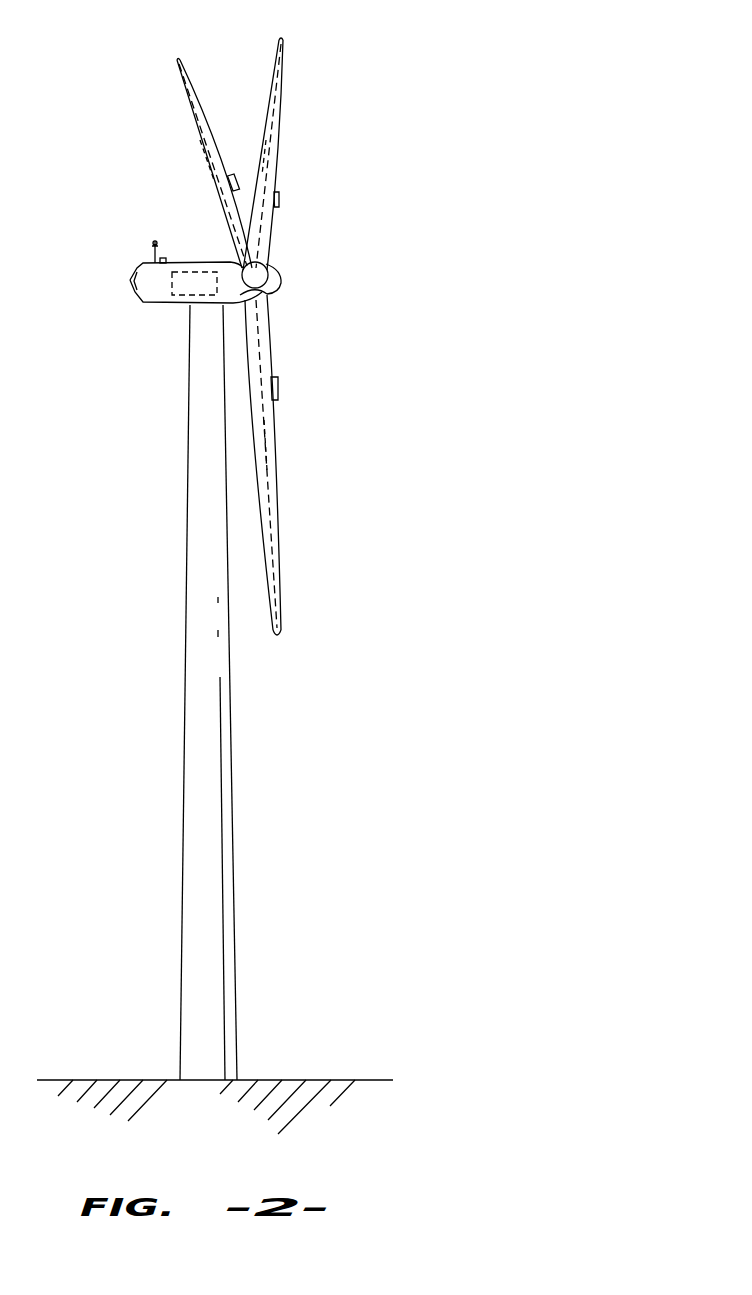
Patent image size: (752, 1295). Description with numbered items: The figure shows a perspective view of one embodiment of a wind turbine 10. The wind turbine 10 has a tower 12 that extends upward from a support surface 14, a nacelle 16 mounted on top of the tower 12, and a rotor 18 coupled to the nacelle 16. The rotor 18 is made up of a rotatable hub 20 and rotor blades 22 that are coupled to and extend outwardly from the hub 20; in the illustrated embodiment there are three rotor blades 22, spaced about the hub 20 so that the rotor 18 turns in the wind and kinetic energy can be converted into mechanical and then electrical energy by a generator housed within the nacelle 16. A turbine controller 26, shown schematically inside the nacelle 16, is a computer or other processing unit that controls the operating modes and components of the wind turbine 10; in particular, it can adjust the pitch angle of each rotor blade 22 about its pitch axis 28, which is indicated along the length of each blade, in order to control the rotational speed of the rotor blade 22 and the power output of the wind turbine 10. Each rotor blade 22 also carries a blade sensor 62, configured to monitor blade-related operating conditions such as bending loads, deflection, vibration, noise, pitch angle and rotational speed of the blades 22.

The wind turbine 10 is at (372, 113).
The tower 12 is at (195, 800).
The support surface 14 is at (113, 1080).
The nacelle 16 is at (168, 308).
The rotor 18 is at (318, 277).
The rotatable hub 20 is at (277, 281).
The rotor blade 22 is at (273, 78).
The turbine controller 26 is at (198, 272).
The pitch axis 28 is at (210, 173).
The blade sensor 62 is at (235, 183).